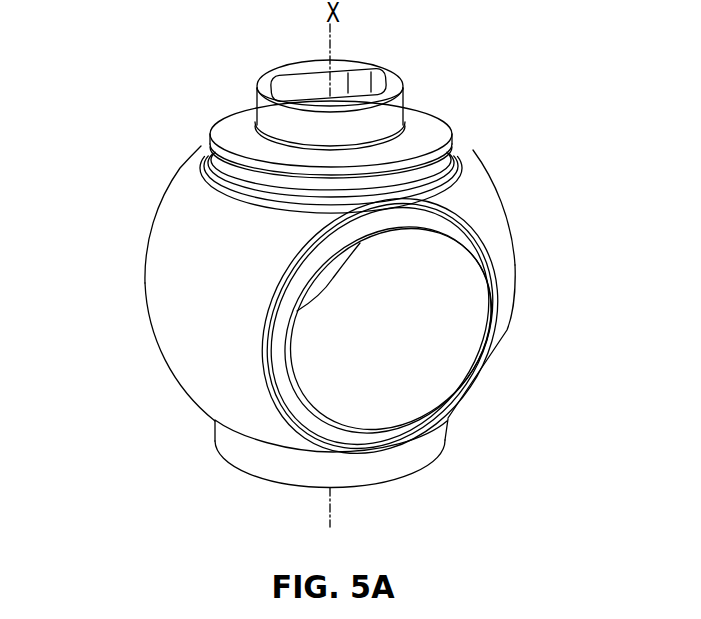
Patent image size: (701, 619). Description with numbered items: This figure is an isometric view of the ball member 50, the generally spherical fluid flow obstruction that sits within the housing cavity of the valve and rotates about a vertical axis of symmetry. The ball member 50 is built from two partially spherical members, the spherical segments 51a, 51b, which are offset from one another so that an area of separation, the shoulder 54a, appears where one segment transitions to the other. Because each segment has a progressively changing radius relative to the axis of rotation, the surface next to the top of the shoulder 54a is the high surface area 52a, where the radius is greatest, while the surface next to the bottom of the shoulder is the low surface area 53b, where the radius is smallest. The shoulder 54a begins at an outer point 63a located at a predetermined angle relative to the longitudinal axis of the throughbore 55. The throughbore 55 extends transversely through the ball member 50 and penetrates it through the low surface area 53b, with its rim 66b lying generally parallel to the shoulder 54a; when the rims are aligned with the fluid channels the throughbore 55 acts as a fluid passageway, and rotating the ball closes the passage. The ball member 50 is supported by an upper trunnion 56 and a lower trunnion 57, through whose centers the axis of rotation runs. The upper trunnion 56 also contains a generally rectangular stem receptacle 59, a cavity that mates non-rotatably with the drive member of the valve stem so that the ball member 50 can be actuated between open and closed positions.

The ball member 50 is at (215, 47).
The spherical segment 51a is at (198, 256).
The spherical segment 51b is at (472, 215).
The high surface area 52a is at (160, 298).
The low surface area 53b is at (495, 265).
The shoulder 54a is at (285, 266).
The throughbore 55 is at (432, 387).
The upper trunnion 56 is at (397, 112).
The lower trunnion 57 is at (420, 456).
The stem receptacle 59 is at (358, 77).
The outer point 63a is at (263, 363).
The rim 66b is at (488, 347).